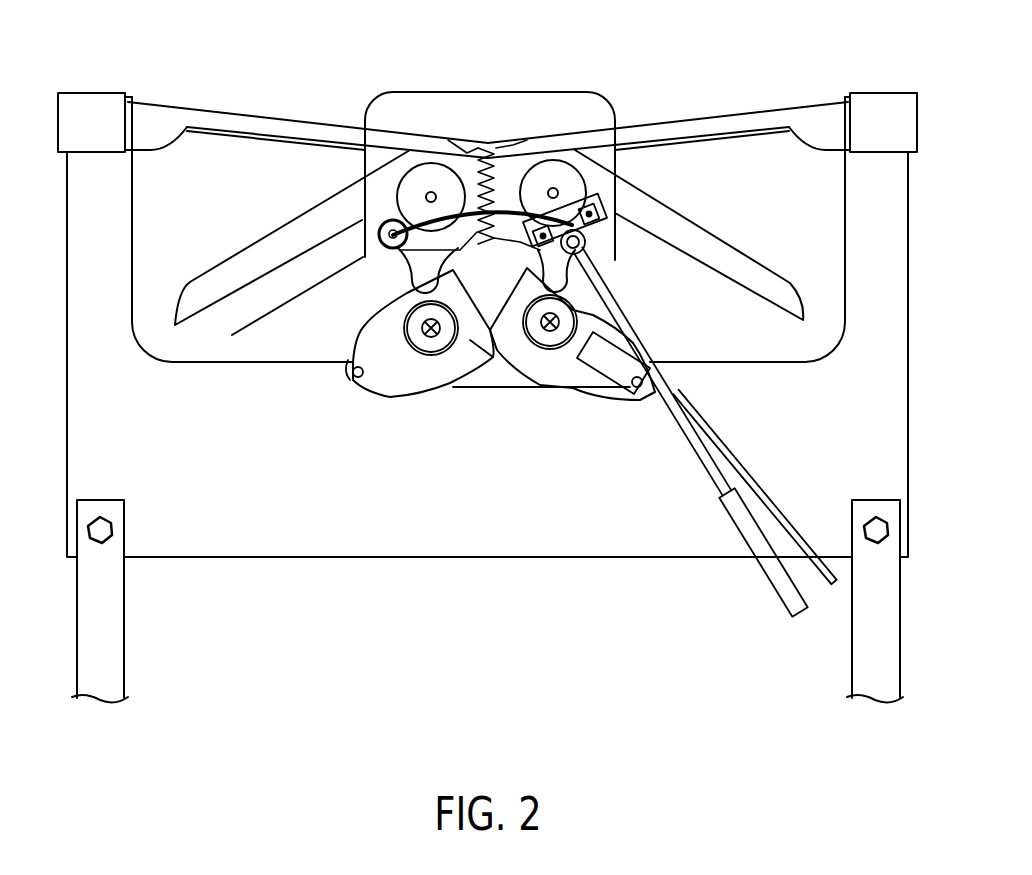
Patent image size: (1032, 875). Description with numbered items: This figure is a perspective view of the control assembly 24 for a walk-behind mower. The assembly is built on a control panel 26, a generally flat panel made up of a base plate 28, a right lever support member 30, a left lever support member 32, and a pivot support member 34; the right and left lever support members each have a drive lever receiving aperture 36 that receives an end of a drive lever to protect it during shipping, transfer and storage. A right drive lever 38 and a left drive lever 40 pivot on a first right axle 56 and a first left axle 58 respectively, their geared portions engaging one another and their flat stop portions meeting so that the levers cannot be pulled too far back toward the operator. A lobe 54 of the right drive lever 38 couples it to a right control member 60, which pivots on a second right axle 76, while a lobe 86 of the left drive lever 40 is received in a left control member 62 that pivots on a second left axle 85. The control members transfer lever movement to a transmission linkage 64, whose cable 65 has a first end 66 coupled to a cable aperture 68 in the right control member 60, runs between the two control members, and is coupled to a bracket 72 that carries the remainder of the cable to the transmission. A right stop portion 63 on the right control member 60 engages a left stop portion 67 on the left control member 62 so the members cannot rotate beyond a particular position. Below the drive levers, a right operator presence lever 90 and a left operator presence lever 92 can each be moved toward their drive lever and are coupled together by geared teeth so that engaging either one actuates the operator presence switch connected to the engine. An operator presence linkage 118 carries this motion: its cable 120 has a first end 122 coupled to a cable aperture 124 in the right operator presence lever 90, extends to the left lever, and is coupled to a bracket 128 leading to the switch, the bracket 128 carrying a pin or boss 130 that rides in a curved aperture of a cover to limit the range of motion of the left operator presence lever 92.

The control assembly 24 is at (838, 57).
The control panel 26 is at (664, 527).
The base plate 28 is at (192, 527).
The right lever support member 30 is at (82, 100).
The left lever support member 32 is at (884, 106).
The pivot support member 34 is at (523, 105).
The drive lever receiving aperture 36 is at (133, 98).
The right drive lever 38 is at (236, 120).
The left drive lever 40 is at (750, 110).
The lobe 54 is at (428, 287).
The first right axle 56 is at (437, 190).
The first left axle 58 is at (555, 190).
The right control member 60 is at (388, 388).
The left control member 62 is at (548, 373).
The right stop portion 63 is at (461, 418).
The transmission linkage 64 is at (611, 365).
The cable 65 is at (490, 390).
The left stop portion 67 is at (510, 368).
The first end 66 is at (305, 355).
The cable aperture 68 is at (323, 408).
The bracket 72 is at (643, 400).
The second right axle 76 is at (362, 297).
The second left axle 85 is at (636, 338).
The lobe 86 is at (550, 273).
The right operator presence lever 90 is at (202, 240).
The left operator presence lever 92 is at (717, 245).
The operator presence linkage 118 is at (677, 407).
The cable 120 is at (472, 205).
The first end 122 is at (405, 228).
The cable aperture 124 is at (388, 228).
The bracket 128 is at (648, 225).
The pin or boss 130 is at (580, 242).